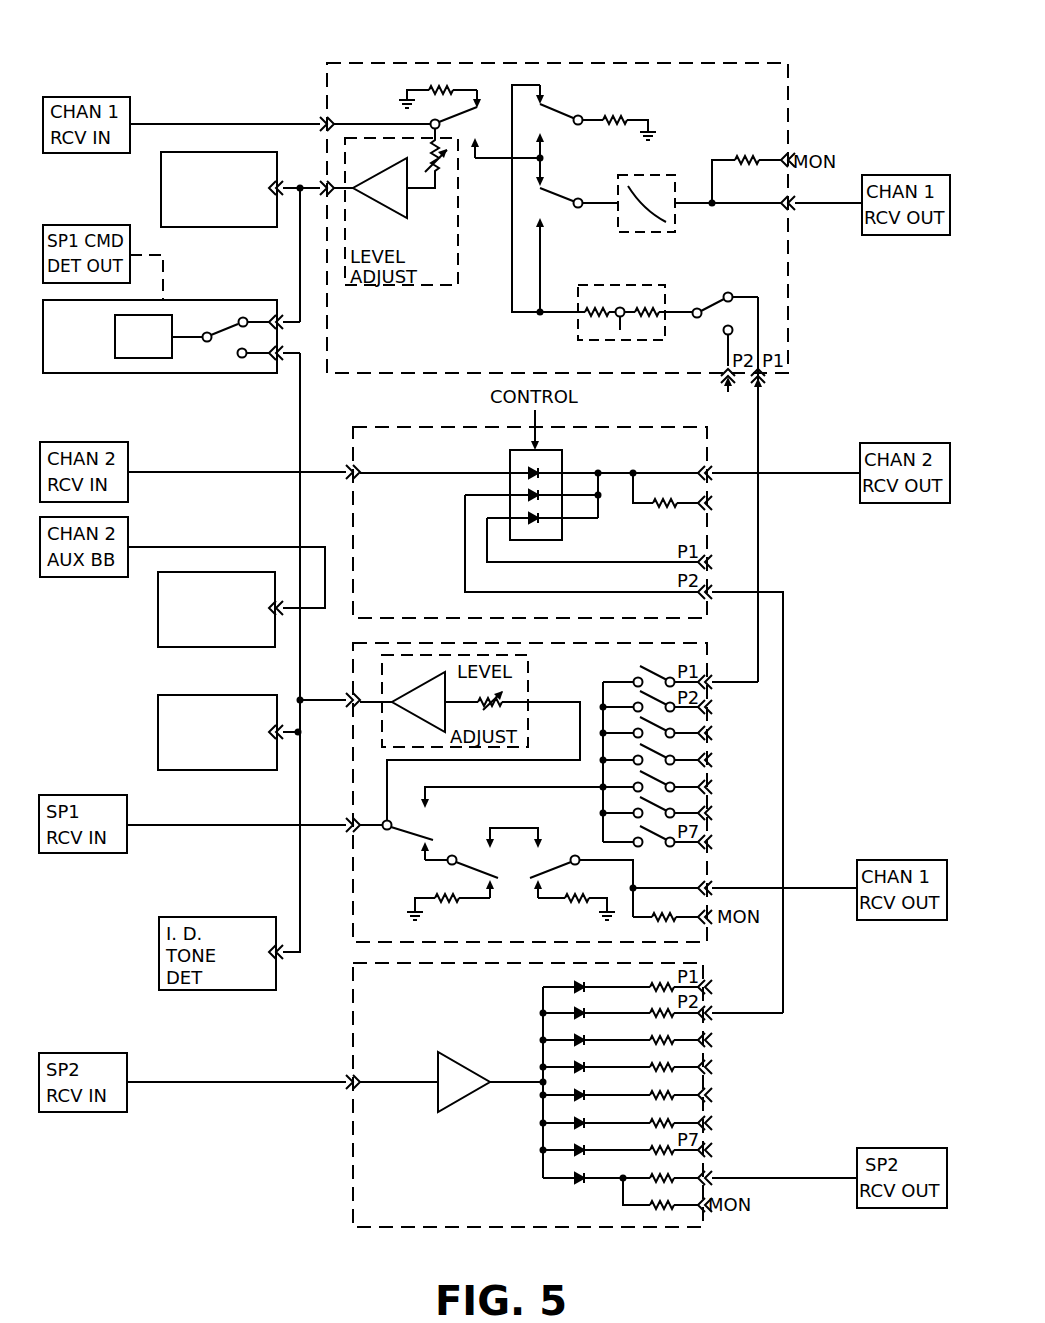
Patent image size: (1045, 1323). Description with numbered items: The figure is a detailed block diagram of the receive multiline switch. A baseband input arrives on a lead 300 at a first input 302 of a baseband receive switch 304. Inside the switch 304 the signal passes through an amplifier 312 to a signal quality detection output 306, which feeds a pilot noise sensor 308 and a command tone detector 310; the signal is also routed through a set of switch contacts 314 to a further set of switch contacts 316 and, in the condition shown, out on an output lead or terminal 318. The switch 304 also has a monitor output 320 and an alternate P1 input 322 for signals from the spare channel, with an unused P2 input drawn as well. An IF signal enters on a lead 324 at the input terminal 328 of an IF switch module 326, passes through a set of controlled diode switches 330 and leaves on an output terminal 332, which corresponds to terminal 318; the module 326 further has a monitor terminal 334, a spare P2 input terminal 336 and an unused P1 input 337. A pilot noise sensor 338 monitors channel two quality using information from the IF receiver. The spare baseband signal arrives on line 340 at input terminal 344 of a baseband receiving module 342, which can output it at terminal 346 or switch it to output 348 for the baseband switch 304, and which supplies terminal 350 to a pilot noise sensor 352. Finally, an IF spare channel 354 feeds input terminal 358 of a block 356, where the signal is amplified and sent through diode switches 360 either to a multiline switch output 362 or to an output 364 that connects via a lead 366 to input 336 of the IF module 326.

The lead 300 is at (177, 123).
The first input 302 is at (320, 118).
The baseband receive switch 304 is at (533, 63).
The signal quality detection output 306 is at (318, 183).
The pilot noise sensor 308 is at (161, 187).
The command tone detector 310 is at (208, 300).
The amplifier 312 is at (378, 200).
The set of switch contacts 314 is at (475, 180).
The further set of switch contacts 316 is at (598, 181).
The output lead or terminal 318 is at (796, 202).
The monitor output 320 is at (794, 155).
The alternate (P1) input 322 is at (761, 382).
The lead 324 is at (205, 472).
The IF switch module 326 is at (440, 426).
The input terminal 328 is at (346, 468).
The set of controlled switches 330 is at (563, 462).
The output terminal 332 is at (707, 468).
The monitor terminal 334 is at (707, 505).
The spare or auxiliary (P2) input terminal 336 is at (713, 596).
The unused auxiliary (P1) input 337 is at (707, 563).
The pilot noise sensor 338 is at (158, 610).
The line 340 is at (211, 824).
The baseband receiving module 342 is at (355, 948).
The input terminal 344 is at (347, 822).
The terminal 346 is at (709, 885).
The output 348 is at (713, 686).
The terminal 350 is at (346, 698).
The pilot noise sensor 352 is at (158, 733).
The IF spare signal channel 354 is at (202, 1082).
The block 356 is at (353, 1158).
The input terminal 358 is at (346, 1080).
The diode switches 360 is at (522, 1010).
The multiline switch output 362 is at (711, 1177).
The output 364 is at (711, 1016).
The lead 366 is at (783, 757).